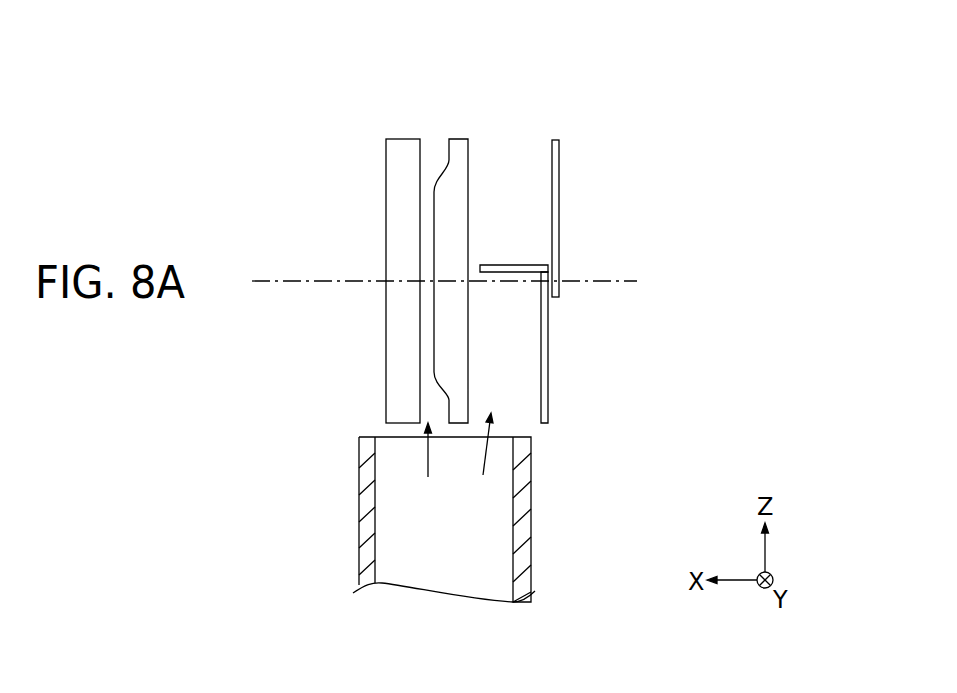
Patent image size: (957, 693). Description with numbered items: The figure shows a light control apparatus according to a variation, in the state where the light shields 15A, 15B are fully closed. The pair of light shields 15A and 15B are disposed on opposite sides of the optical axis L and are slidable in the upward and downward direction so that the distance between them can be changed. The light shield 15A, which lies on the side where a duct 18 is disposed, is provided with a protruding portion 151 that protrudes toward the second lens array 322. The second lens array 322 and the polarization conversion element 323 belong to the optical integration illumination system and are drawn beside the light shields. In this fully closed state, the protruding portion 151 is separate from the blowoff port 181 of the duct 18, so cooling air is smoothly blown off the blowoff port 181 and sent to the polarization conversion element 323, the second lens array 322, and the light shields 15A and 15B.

The optical axis L is at (616, 278).
The polarization conversion element 323 is at (397, 146).
The second lens array 322 is at (460, 146).
The protruding portion 151 is at (510, 265).
The light shield 15A is at (545, 362).
The light shield 15B is at (556, 167).
The duct 18 is at (522, 528).
The blowoff port 181 is at (497, 459).